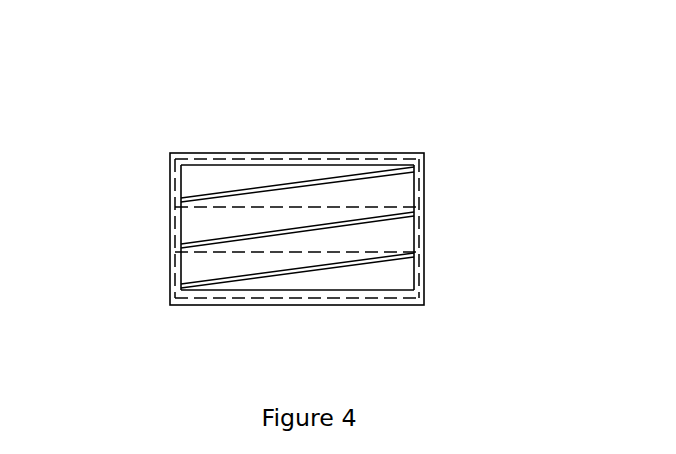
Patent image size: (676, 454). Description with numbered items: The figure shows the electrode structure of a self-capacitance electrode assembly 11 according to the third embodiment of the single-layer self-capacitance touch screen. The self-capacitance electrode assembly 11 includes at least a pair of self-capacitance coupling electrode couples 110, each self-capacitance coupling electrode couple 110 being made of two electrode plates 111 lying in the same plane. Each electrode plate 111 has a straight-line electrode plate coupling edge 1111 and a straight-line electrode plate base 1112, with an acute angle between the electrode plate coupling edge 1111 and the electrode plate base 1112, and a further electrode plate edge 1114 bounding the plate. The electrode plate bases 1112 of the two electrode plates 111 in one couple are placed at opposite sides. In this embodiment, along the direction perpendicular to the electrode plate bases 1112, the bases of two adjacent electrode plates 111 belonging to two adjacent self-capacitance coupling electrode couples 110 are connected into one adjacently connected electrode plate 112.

The self-capacitance electrode assembly 11 is at (263, 305).
The self-capacitance coupling electrode couple 110 is at (420, 172).
The electrode plate 111 is at (212, 180).
The adjacently connected electrode plate 112 is at (288, 214).
The electrode plate coupling edge 1111 is at (271, 187).
The electrode plate base 1112 is at (362, 159).
The electrode plate edge 1114 is at (178, 183).